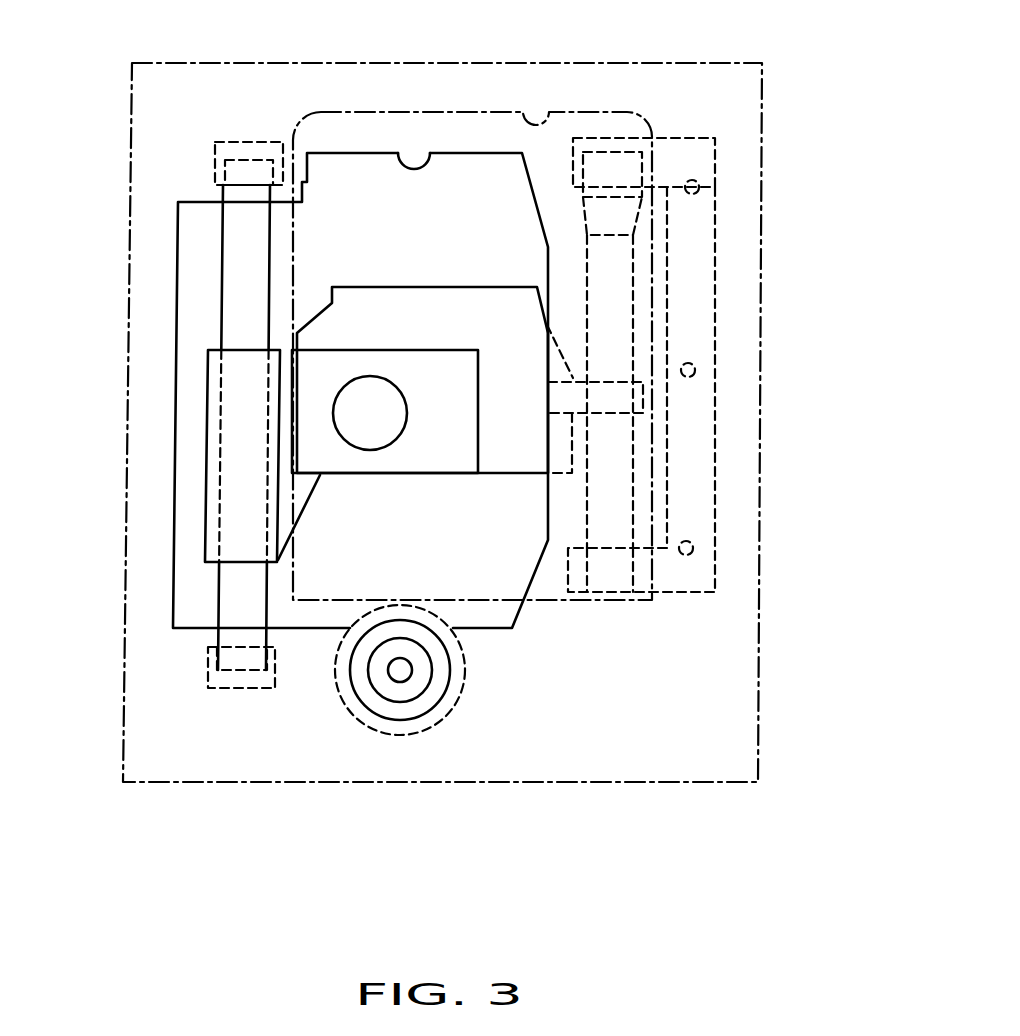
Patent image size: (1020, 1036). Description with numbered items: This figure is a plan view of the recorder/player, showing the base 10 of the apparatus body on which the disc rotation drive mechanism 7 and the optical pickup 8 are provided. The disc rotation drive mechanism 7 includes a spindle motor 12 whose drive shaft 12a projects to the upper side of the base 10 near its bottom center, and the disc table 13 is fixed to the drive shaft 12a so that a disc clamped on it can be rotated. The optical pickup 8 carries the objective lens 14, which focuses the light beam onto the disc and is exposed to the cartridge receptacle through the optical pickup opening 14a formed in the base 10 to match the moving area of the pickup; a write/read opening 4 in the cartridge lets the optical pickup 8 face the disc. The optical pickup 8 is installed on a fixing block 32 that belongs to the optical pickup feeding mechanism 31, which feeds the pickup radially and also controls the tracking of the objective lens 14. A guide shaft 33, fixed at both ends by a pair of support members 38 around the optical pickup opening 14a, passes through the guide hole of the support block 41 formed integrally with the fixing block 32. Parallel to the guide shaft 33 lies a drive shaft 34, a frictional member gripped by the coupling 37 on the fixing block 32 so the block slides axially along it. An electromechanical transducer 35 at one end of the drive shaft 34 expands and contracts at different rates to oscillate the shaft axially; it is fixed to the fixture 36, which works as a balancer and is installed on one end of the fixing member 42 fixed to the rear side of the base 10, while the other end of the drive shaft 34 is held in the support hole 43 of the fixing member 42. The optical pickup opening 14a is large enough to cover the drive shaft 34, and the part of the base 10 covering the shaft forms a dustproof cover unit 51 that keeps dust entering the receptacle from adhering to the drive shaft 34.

The write/read opening 4 is at (550, 108).
The disc rotation drive mechanism 7 is at (449, 704).
The optical pickup 8 is at (445, 285).
The base 10 is at (312, 83).
The spindle motor 12 is at (345, 707).
The drive shaft 12a is at (399, 674).
The disc table 13 is at (423, 668).
The objective lens 14 is at (367, 423).
The optical pickup opening 14a is at (431, 158).
The optical pickup feeding mechanism 31 is at (690, 632).
The fixing block 32 is at (520, 475).
The guide shaft 33 is at (240, 273).
The drive shaft 34 is at (620, 490).
The electromechanical transducer 35 is at (630, 219).
The fixture 36 is at (633, 174).
The coupling 37 is at (620, 402).
The support member 38 is at (217, 165).
The support block 41 is at (233, 440).
The fixing member 42 is at (713, 318).
The support hole 43 is at (583, 572).
The dustproof cover unit 51 is at (573, 293).